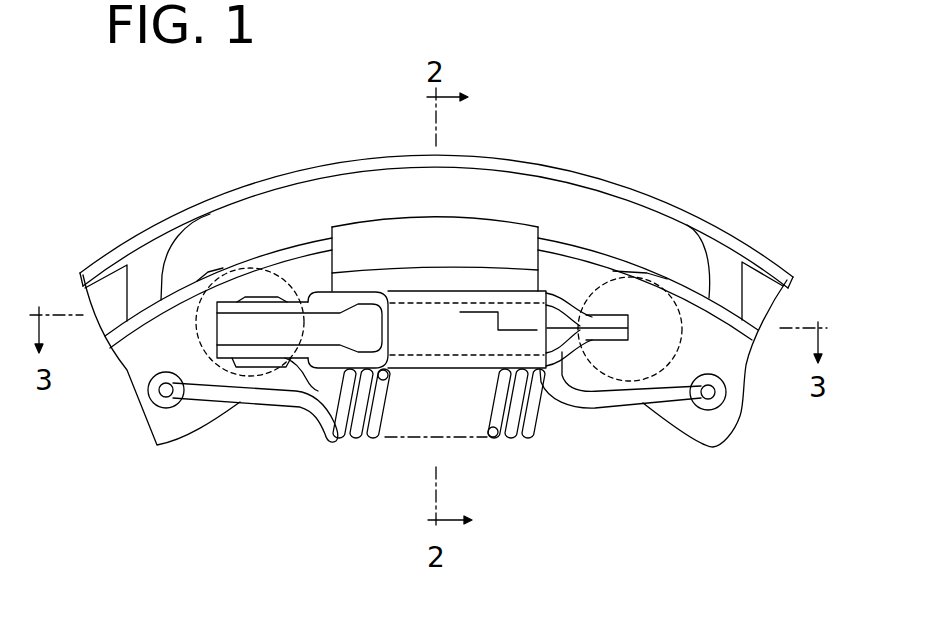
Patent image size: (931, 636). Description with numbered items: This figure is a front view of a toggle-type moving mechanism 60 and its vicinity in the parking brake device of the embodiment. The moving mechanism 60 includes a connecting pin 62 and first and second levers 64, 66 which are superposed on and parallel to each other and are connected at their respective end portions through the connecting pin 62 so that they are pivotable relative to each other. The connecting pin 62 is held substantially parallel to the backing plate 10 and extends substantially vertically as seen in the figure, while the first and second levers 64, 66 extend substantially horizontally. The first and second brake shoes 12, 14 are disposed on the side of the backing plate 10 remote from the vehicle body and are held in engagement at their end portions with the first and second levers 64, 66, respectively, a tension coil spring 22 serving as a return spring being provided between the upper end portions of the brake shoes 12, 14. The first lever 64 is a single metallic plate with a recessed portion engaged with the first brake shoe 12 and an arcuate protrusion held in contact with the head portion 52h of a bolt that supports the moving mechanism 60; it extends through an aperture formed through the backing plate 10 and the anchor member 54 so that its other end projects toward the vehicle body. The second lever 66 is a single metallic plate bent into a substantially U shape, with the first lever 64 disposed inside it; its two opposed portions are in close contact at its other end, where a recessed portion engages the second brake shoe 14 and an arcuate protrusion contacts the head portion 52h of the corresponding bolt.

The backing plate 10 is at (728, 257).
The first brake shoe 12 is at (167, 428).
The second brake shoe 14 is at (707, 428).
The tension coil spring 22 is at (355, 428).
The head portion 52h is at (240, 305).
The anchor member 54 is at (388, 237).
The toggle-type moving mechanism 60 is at (510, 282).
The connecting pin 62 is at (247, 358).
The first lever 64 is at (283, 327).
The second lever 66 is at (472, 307).